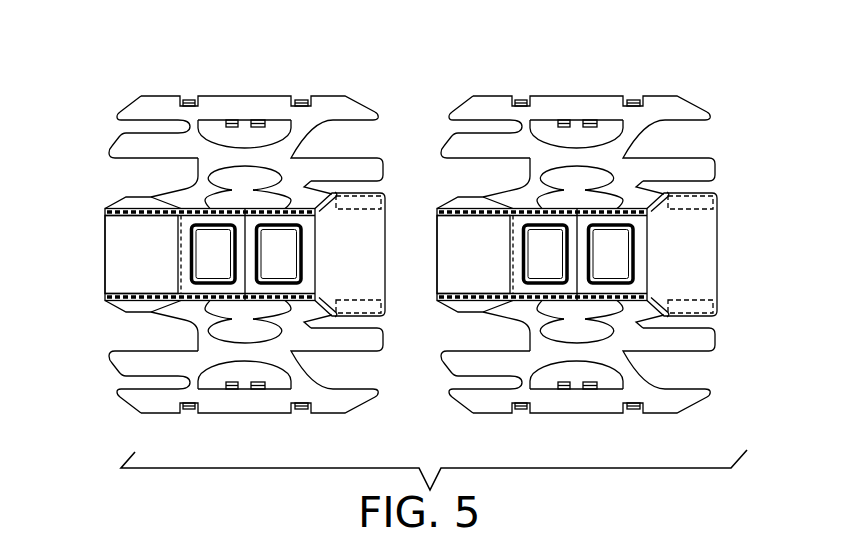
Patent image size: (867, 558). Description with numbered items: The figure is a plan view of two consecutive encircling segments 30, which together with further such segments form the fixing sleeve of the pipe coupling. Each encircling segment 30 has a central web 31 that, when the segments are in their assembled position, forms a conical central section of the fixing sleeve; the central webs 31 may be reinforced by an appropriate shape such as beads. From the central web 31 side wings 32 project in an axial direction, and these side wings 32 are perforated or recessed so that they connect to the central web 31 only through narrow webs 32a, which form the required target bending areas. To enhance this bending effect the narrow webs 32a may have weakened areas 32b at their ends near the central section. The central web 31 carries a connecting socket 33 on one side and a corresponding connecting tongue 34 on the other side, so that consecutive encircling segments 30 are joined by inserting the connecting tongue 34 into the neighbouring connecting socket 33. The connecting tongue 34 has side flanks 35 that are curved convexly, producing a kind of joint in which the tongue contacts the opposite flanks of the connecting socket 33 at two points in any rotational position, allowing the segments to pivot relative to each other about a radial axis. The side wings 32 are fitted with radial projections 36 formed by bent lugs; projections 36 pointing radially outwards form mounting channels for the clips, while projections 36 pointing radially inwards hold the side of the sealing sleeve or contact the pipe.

The encircling segment 30 is at (122, 318).
The central web 31 is at (217, 221).
The side wing 32 is at (242, 108).
The narrow web 32a is at (293, 196).
The weakened area 32b is at (200, 212).
The connecting socket 33 is at (357, 279).
The connecting tongue 34 is at (452, 269).
The side flank 35 is at (462, 201).
The radial projection 36 is at (565, 121).